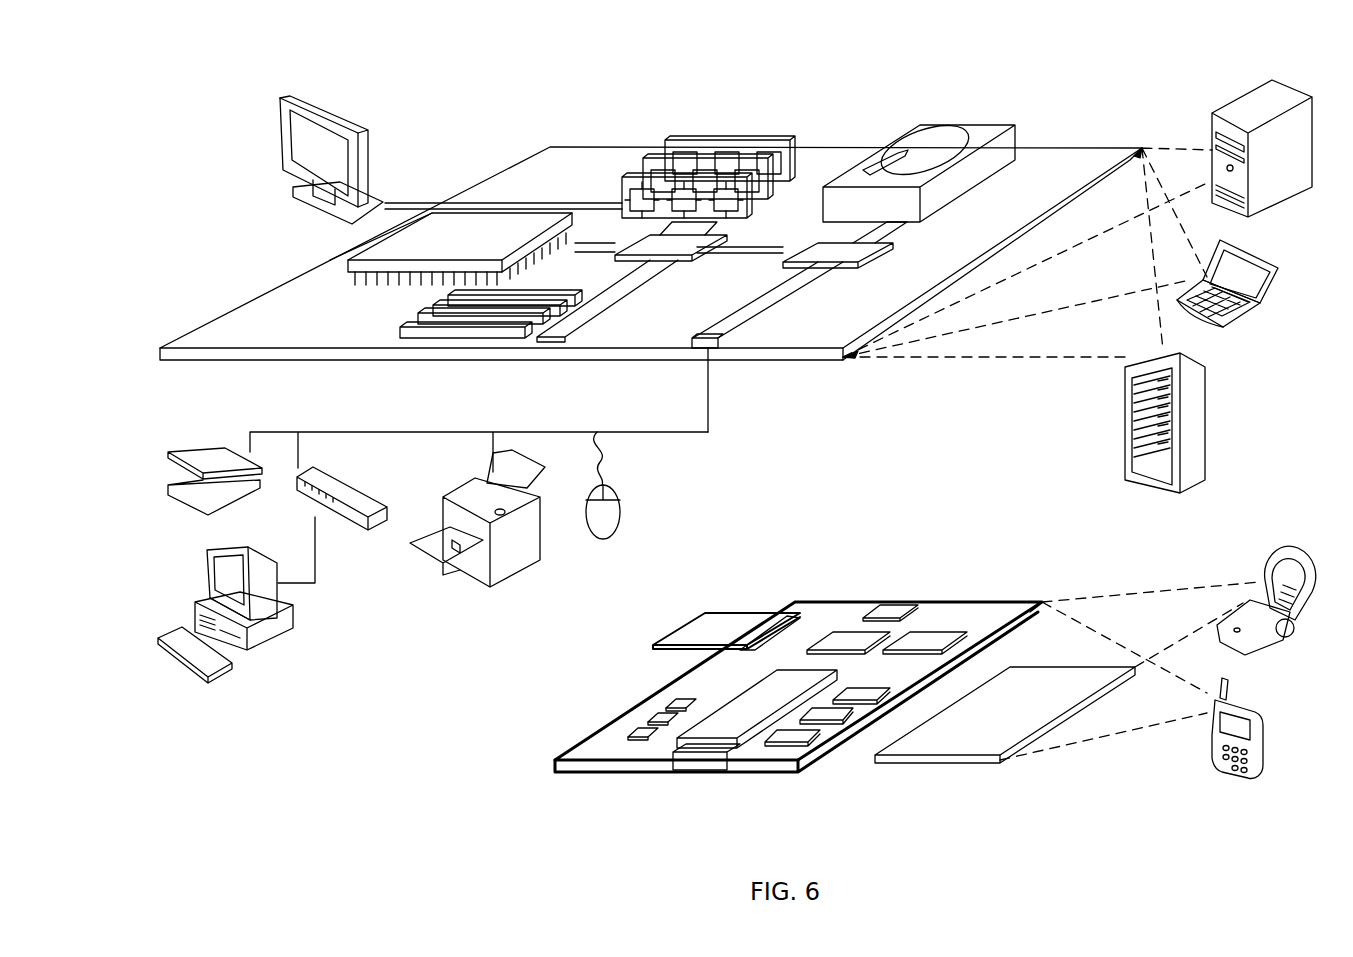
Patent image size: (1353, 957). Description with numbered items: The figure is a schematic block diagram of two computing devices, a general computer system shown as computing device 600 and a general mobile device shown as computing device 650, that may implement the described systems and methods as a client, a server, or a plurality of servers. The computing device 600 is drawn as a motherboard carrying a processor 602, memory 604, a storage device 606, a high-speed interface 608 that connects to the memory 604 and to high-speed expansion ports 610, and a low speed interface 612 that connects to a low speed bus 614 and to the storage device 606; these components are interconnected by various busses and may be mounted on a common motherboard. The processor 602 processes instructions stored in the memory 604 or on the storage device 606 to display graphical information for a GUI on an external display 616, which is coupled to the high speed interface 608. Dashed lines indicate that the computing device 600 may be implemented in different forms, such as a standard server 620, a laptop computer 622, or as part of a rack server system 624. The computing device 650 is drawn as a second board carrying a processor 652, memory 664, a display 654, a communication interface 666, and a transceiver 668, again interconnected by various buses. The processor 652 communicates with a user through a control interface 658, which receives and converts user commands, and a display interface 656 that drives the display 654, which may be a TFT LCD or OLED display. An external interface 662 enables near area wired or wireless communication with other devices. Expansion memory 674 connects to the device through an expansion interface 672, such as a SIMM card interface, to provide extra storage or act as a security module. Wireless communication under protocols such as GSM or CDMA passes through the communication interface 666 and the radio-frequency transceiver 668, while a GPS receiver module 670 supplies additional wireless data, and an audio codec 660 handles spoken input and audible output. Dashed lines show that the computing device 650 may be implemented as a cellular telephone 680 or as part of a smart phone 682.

The computing device 600 is at (478, 120).
The processor 602 is at (348, 260).
The memory 604 is at (677, 140).
The storage device 606 is at (917, 124).
The high-speed interface 608 is at (645, 248).
The high-speed expansion ports 610 is at (423, 318).
The low speed interface 612 is at (820, 247).
The low speed bus 614 is at (718, 348).
The display 616 is at (280, 96).
The standard server 620 is at (1212, 131).
The laptop computer 622 is at (1270, 260).
The rack server system 624 is at (1125, 472).
The computing device 650 is at (530, 770).
The processor 652 is at (730, 727).
The display 654 is at (963, 745).
The display interface 656 is at (800, 735).
The control interface 658 is at (845, 713).
The audio codec 660 is at (870, 697).
The external interface 662 is at (697, 762).
The memory 664 is at (650, 728).
The communication interface 666 is at (850, 643).
The transceiver 668 is at (925, 640).
The GPS receiver module 670 is at (890, 615).
The expansion interface 672 is at (770, 613).
The expansion memory 674 is at (705, 613).
The cellular telephone 680 is at (1262, 530).
The smart phone 682 is at (1212, 733).